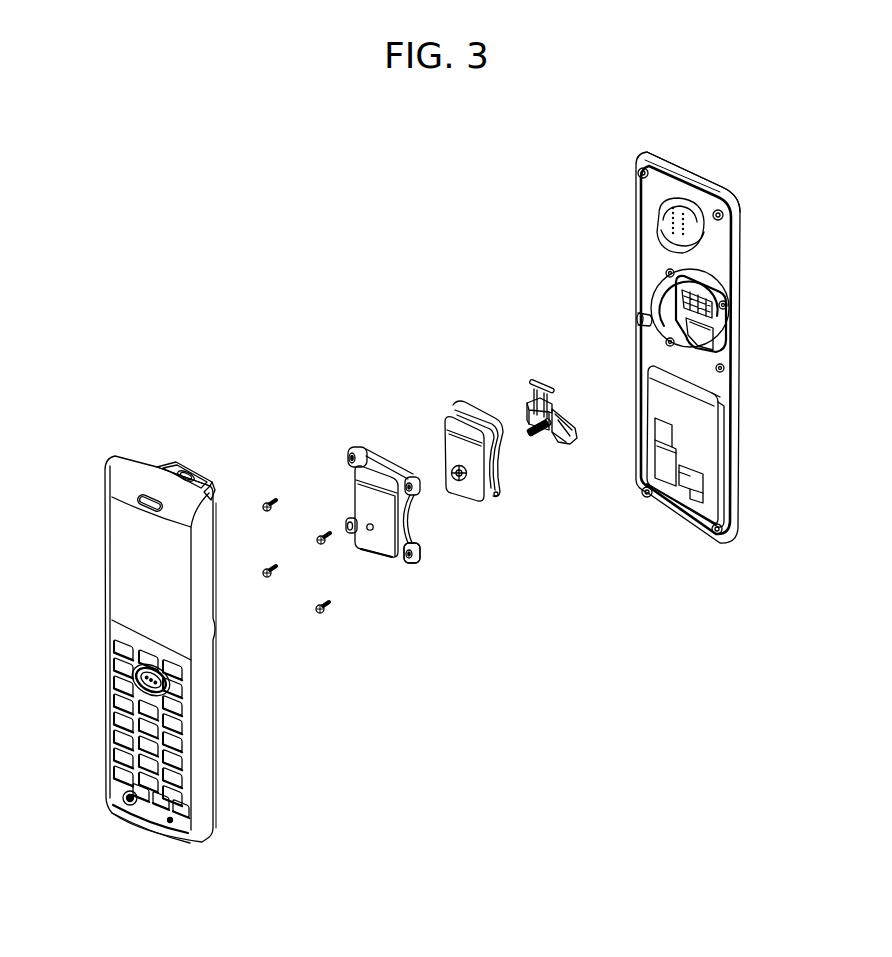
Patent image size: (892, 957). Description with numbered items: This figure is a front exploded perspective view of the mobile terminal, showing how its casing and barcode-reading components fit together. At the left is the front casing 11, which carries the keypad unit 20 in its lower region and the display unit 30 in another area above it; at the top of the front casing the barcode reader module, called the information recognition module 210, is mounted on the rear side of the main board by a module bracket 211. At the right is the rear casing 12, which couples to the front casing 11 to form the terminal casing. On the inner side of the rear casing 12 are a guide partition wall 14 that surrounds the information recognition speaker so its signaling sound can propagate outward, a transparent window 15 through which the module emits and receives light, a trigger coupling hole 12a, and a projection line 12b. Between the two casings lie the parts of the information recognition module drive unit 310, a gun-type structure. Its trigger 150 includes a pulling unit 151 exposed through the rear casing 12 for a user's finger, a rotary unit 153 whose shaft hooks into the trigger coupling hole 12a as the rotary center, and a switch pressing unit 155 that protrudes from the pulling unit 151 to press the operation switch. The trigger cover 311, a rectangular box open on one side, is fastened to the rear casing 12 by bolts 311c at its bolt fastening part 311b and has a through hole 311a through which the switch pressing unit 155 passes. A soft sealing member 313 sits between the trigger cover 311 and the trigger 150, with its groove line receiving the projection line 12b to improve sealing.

The front casing 11 is at (208, 708).
The rear casing 12 is at (742, 221).
The trigger coupling hole 12a is at (716, 317).
The projection line 12b is at (724, 282).
The guide partition wall 14 is at (680, 203).
The window 15 is at (703, 178).
The keypad unit 20 is at (103, 636).
The display unit 30 is at (122, 572).
The trigger 150 is at (579, 412).
The pulling unit 151 is at (574, 424).
The rotary unit 153 is at (549, 386).
The switch pressing unit 155 is at (537, 438).
The information recognition module 210 is at (188, 473).
The module bracket 211 is at (212, 493).
The information recognition module drive unit 310 is at (548, 296).
The trigger cover 311 is at (382, 442).
The through hole 311a is at (372, 530).
The bolt fastening part 311b is at (414, 562).
The bolt 311c is at (318, 615).
The sealing member 313 is at (475, 396).